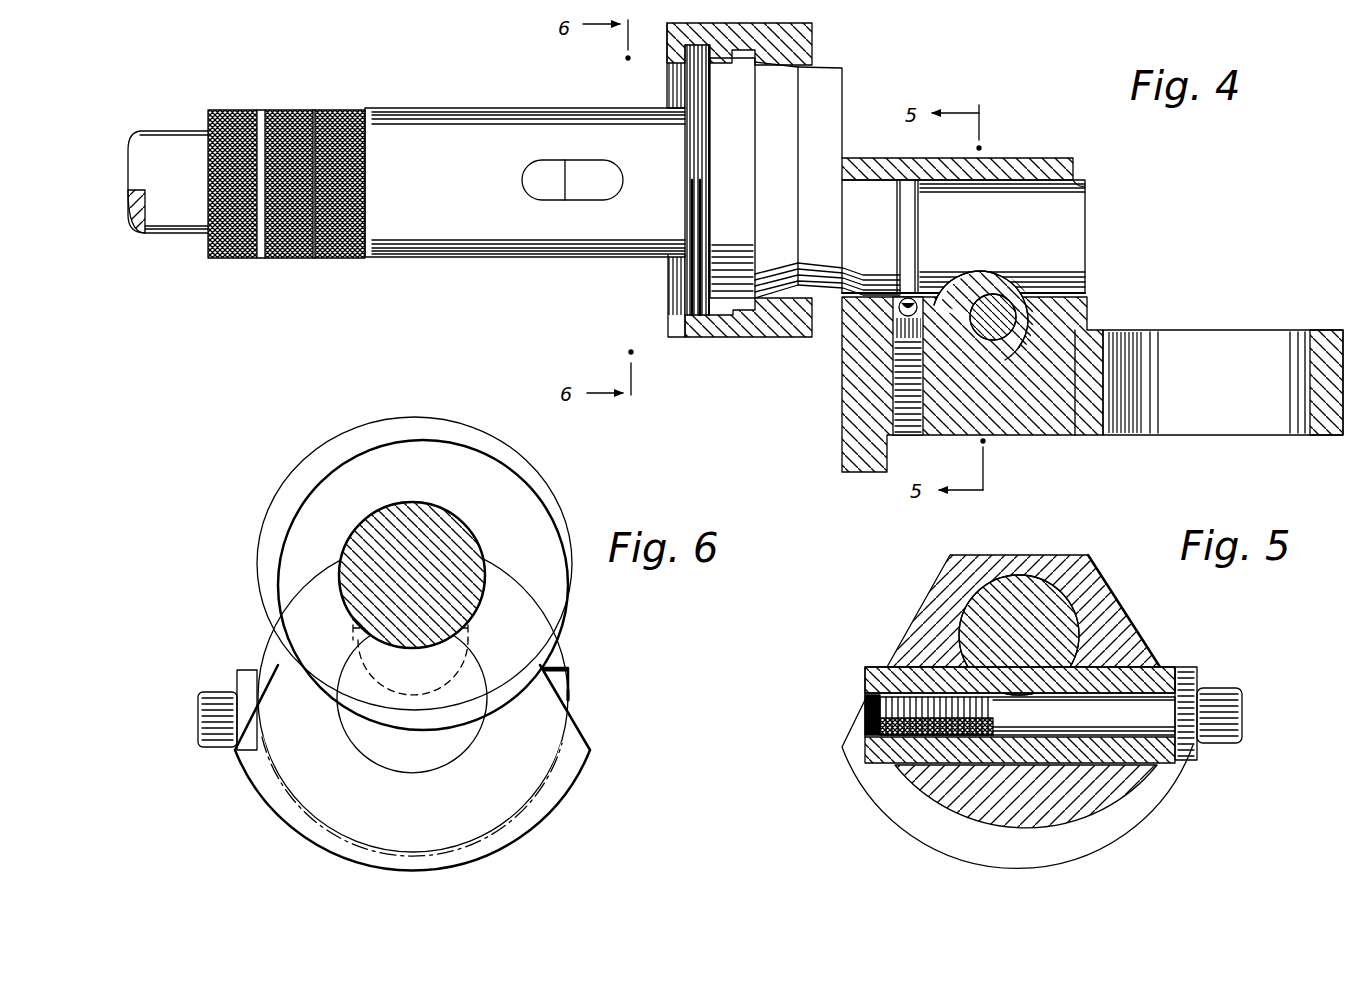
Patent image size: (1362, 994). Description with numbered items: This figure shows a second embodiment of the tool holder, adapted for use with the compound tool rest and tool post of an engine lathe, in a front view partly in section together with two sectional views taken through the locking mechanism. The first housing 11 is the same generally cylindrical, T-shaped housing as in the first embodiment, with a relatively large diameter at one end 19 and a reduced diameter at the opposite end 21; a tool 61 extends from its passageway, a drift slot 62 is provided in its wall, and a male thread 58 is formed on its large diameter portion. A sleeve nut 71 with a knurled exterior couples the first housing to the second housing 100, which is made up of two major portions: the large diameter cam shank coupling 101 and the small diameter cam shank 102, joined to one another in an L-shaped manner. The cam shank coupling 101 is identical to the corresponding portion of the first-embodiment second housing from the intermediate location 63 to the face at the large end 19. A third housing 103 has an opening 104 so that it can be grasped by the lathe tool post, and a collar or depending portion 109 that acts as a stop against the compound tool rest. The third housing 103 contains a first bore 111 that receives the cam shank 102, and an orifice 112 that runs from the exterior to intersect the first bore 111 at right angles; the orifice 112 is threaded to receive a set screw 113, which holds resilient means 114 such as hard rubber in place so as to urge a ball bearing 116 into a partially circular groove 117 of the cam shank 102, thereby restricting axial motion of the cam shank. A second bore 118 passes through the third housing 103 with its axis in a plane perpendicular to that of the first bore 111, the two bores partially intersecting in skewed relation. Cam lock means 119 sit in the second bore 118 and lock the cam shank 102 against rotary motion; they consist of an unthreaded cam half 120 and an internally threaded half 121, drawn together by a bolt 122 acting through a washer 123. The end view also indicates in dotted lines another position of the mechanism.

In FIG. 4, the first housing 11 is at (608, 257).
In FIG. 6, the first housing 11 is at (473, 537).
In FIG. 4, the large diameter end 19 is at (755, 160).
In FIG. 4, the reduced diameter end 21 is at (232, 110).
In FIG. 4, the male thread 58 is at (692, 157).
In FIG. 4, the tool 61 is at (165, 130).
In FIG. 4, the drift slot 62 is at (580, 191).
In FIG. 4, the intermediate location 63 is at (845, 157).
In FIG. 4, the sleeve nut 71 is at (698, 338).
In FIG. 6, the sleeve nut 71 is at (560, 515).
In FIG. 4, the second housing 100 is at (1088, 258).
In FIG. 4, the cam shank coupling 101 is at (836, 95).
In FIG. 4, the cam shank 102 is at (1076, 227).
In FIG. 6, the cam shank 102 is at (470, 632).
In FIG. 5, the cam shank 102 is at (1043, 598).
In FIG. 4, the third housing 103 is at (1105, 328).
In FIG. 6, the third housing 103 is at (580, 773).
In FIG. 5, the third housing 103 is at (850, 768).
In FIG. 4, the opening 104 is at (1268, 335).
In FIG. 4, the collar or depending portion 109 is at (867, 473).
In FIG. 5, the collar or depending portion 109 is at (883, 798).
In FIG. 4, the first bore 111 is at (1088, 186).
In FIG. 4, the orifice 112 is at (917, 366).
In FIG. 4, the set screw 113 is at (893, 395).
In FIG. 4, the resilient means 114 is at (893, 335).
In FIG. 4, the ball bearing 116 is at (897, 306).
In FIG. 4, the partially circular groove 117 is at (913, 225).
In FIG. 4, the second bore 118 is at (1014, 352).
In FIG. 5, the second bore 118 is at (1158, 667).
In FIG. 4, the cam lock means 119 is at (1015, 338).
In FIG. 6, the cam lock means 119 is at (570, 680).
In FIG. 5, the cam lock means 119 is at (865, 688).
In FIG. 6, the cam half 120 is at (265, 682).
In FIG. 5, the cam half 120 is at (1160, 753).
In FIG. 6, the cam half 121 is at (570, 693).
In FIG. 5, the cam half 121 is at (883, 673).
In FIG. 4, the bolt 122 is at (1010, 318).
In FIG. 5, the bolt 122 is at (1090, 723).
In FIG. 6, the washer 123 is at (240, 680).
In FIG. 5, the washer 123 is at (1197, 668).